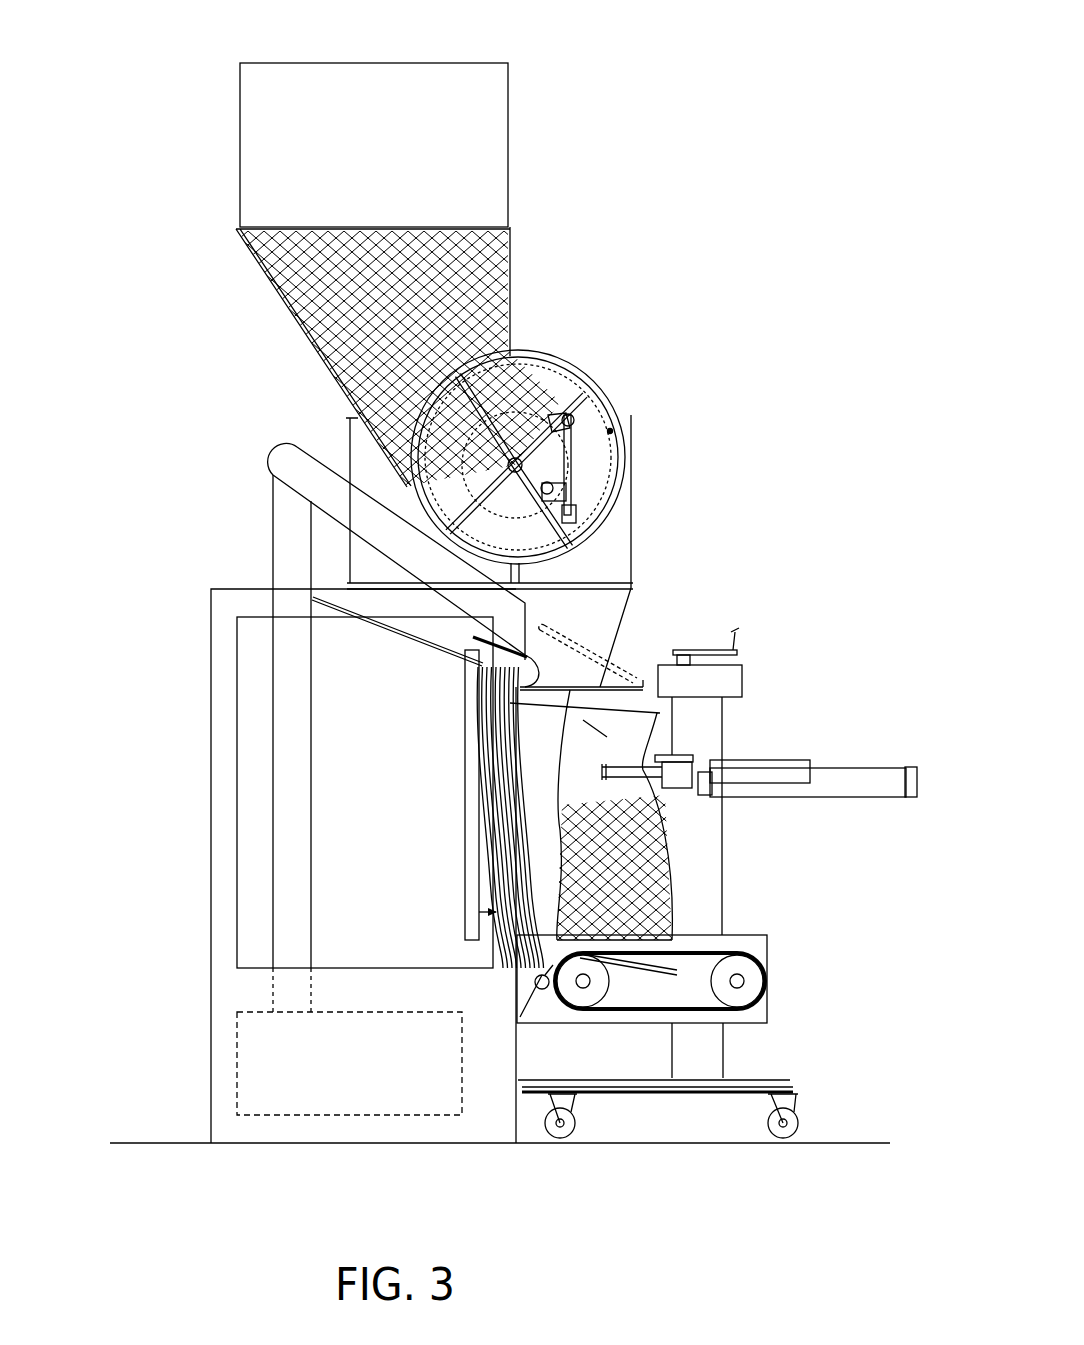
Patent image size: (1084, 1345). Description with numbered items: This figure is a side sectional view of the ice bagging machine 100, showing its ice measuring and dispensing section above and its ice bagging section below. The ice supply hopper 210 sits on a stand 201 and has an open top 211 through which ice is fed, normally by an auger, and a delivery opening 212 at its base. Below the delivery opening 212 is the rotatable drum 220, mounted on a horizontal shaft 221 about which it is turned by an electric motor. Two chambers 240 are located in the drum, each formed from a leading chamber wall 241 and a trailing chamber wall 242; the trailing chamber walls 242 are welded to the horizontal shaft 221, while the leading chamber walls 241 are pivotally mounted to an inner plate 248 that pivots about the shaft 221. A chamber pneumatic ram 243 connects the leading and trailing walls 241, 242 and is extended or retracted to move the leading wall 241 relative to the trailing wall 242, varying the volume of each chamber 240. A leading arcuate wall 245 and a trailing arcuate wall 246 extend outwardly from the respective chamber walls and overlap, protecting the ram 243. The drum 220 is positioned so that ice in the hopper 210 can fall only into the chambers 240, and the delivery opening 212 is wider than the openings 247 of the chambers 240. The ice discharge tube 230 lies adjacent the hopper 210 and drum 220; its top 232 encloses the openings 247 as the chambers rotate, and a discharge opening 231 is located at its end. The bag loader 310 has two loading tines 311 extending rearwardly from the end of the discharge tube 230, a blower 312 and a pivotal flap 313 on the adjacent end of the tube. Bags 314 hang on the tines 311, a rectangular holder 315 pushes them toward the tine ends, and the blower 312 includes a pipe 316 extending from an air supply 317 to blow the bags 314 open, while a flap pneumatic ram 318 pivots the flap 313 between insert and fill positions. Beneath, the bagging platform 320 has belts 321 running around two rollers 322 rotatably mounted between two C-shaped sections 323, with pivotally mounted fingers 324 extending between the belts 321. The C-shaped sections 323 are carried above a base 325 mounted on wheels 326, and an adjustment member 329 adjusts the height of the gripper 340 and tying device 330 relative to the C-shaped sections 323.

The ice bagging machine 100 is at (674, 121).
The stand 201 is at (212, 830).
The ice supply hopper 210 is at (500, 245).
The open top 211 is at (355, 108).
The delivery opening 212 is at (296, 320).
The rotatable drum 220 is at (617, 395).
The horizontal shaft 221 is at (345, 415).
The discharge tube 230 is at (597, 612).
The discharge opening 231 is at (467, 730).
The top 232 is at (597, 368).
The chambers 240 is at (497, 367).
The leading chamber wall 241 is at (620, 480).
The trailing chamber wall 242 is at (522, 352).
The chamber pneumatic ram 243 is at (632, 502).
The leading arcuate wall 245 is at (624, 447).
The trailing arcuate wall 246 is at (605, 542).
The openings 247 is at (612, 428).
The inner plate 248 is at (347, 468).
The bag loader 310 is at (440, 768).
The loading tines 311 is at (380, 627).
The blower 312 is at (262, 508).
The pivotal flap 313 is at (612, 688).
The bags 314 is at (467, 880).
The rectangular holder 315 is at (467, 803).
The pipe 316 is at (283, 697).
The air supply 317 is at (300, 1083).
The flap pneumatic ram 318 is at (642, 660).
The bagging platform 320 is at (780, 904).
The belts 321 is at (757, 940).
The rollers 322 is at (746, 985).
The C-shaped sections 323 is at (767, 1018).
The fingers 324 is at (578, 1000).
The base 325 is at (643, 1090).
The wheels 326 is at (570, 1135).
The adjustment member 329 is at (732, 680).
The tying device 330 is at (813, 783).
The gripper 340 is at (770, 772).